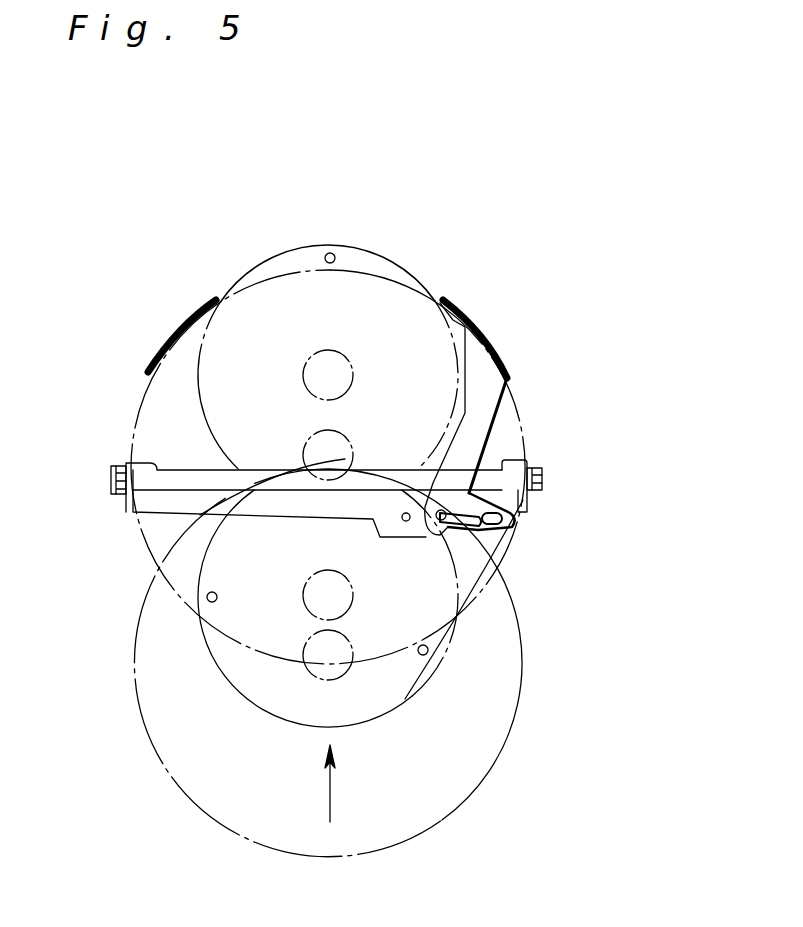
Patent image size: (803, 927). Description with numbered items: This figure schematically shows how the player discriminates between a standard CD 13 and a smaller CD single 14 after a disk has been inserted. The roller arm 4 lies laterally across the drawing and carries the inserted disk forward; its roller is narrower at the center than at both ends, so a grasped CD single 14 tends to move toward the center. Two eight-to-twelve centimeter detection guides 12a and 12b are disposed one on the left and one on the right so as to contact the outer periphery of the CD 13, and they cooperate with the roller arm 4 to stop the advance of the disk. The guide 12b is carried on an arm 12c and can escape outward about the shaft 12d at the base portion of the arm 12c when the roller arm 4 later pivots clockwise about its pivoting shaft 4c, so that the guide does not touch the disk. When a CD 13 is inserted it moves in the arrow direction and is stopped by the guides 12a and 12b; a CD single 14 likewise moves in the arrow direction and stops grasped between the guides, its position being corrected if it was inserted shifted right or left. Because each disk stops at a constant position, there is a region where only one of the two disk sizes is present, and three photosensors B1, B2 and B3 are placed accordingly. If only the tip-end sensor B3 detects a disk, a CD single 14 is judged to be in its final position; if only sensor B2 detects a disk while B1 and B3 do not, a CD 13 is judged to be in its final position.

The roller arm 4 is at (167, 497).
The pivoting shaft 4c is at (406, 522).
The 8 cm-12 cm detection guide 12a is at (185, 322).
The 8 cm-12 cm detection guide 12b is at (482, 330).
The arm 12c is at (476, 427).
The shaft 12d is at (462, 540).
The CD 13 is at (445, 822).
The CD single 14 is at (405, 697).
The photosensor B1 is at (428, 649).
The photosensor B2 is at (214, 592).
The photosensor B3 is at (331, 253).